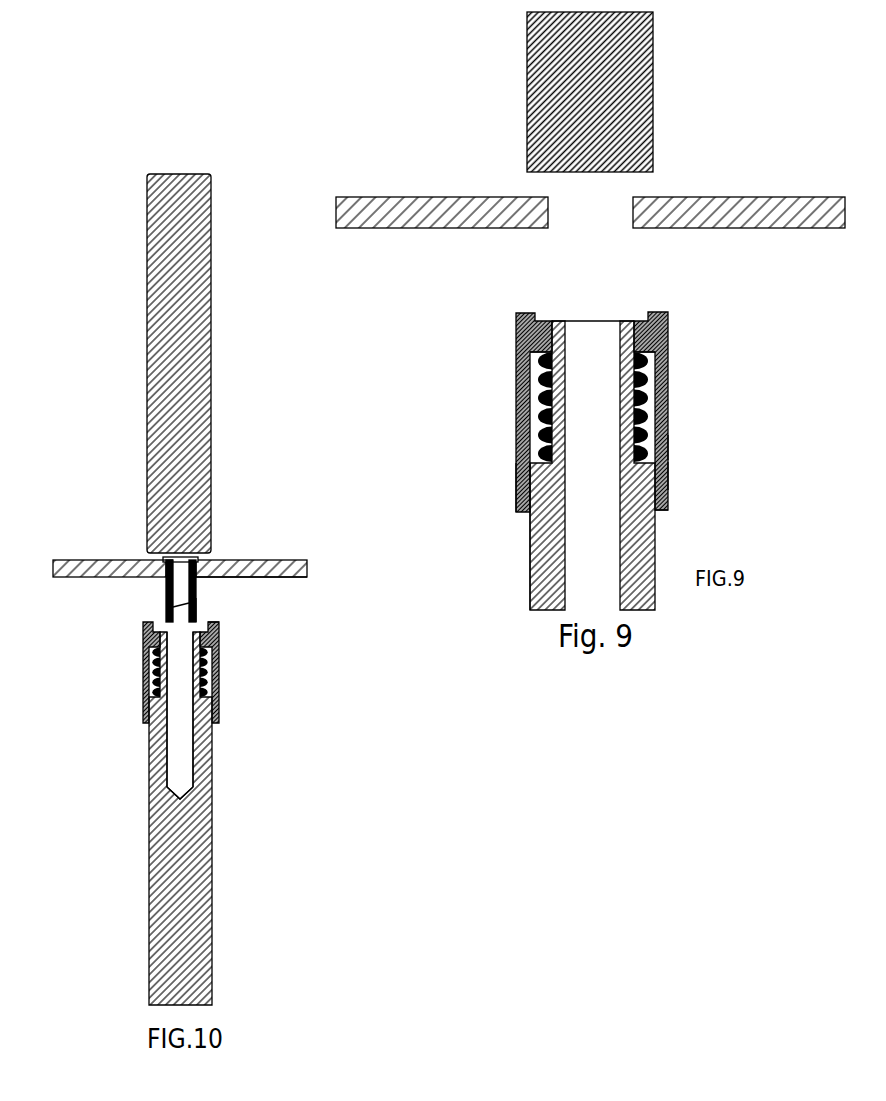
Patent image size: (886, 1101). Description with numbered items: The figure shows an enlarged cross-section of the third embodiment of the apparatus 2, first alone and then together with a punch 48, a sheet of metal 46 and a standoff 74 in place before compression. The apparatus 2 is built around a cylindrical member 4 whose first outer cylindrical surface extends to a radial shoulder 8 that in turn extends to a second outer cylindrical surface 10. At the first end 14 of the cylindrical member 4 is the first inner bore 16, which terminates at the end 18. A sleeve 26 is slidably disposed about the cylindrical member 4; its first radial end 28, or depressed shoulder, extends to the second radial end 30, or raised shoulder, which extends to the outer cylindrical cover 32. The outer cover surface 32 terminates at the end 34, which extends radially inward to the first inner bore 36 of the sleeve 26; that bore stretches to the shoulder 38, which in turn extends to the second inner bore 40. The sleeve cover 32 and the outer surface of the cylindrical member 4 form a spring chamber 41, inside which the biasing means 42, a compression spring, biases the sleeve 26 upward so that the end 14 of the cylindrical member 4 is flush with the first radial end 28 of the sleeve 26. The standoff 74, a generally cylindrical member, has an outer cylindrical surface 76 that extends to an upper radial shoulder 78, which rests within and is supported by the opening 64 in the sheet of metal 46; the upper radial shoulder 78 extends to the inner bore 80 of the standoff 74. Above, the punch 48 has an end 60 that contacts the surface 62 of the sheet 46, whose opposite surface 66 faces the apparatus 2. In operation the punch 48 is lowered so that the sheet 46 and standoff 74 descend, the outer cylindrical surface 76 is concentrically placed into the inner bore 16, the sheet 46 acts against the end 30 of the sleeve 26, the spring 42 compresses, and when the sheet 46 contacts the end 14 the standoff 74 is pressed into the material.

In FIG. 9, the apparatus 2 is at (480, 308).
In FIG. 9, the cylindrical member 4 is at (548, 540).
In FIG. 10, the cylindrical member 4 is at (150, 885).
In FIG. 9, the radial shoulder 8 is at (526, 482).
In FIG. 9, the second outer cylindrical surface 10 is at (530, 578).
In FIG. 9, the first end 14 is at (557, 321).
In FIG. 10, the first end 14 is at (144, 645).
In FIG. 9, the first inner bore 16 is at (566, 585).
In FIG. 10, the first inner bore 16 is at (167, 765).
In FIG. 10, the end 18 is at (190, 793).
In FIG. 9, the sleeve 26 is at (517, 373).
In FIG. 10, the sleeve 26 is at (220, 675).
In FIG. 9, the first radial end 28 is at (642, 321).
In FIG. 9, the second radial end 30 is at (660, 310).
In FIG. 10, the second radial end 30 is at (210, 624).
In FIG. 9, the outer cylindrical cover 32 is at (670, 472).
In FIG. 9, the end 34 is at (662, 511).
In FIG. 9, the first inner bore 36 is at (658, 452).
In FIG. 9, the shoulder 38 is at (652, 348).
In FIG. 9, the second inner bore 40 is at (540, 348).
In FIG. 9, the spring chamber 41 is at (652, 395).
In FIG. 10, the spring chamber 41 is at (150, 712).
In FIG. 9, the biasing means 42 is at (538, 413).
In FIG. 10, the biasing means 42 is at (210, 657).
In FIG. 9, the sheet of metal 46 is at (360, 197).
In FIG. 10, the sheet of metal 46 is at (62, 560).
In FIG. 9, the punch 48 is at (527, 75).
In FIG. 10, the punch 48 is at (213, 508).
In FIG. 10, the end 60 is at (196, 556).
In FIG. 9, the surface 62 is at (774, 197).
In FIG. 10, the surface 62 is at (285, 561).
In FIG. 10, the opening 64 is at (173, 558).
In FIG. 10, the surface 66 is at (232, 577).
In FIG. 10, the standoff 74 is at (263, 588).
In FIG. 10, the outer cylindrical surface 76 is at (196, 598).
In FIG. 10, the upper radial shoulder 78 is at (163, 558).
In FIG. 10, the inner bore 80 is at (166, 612).